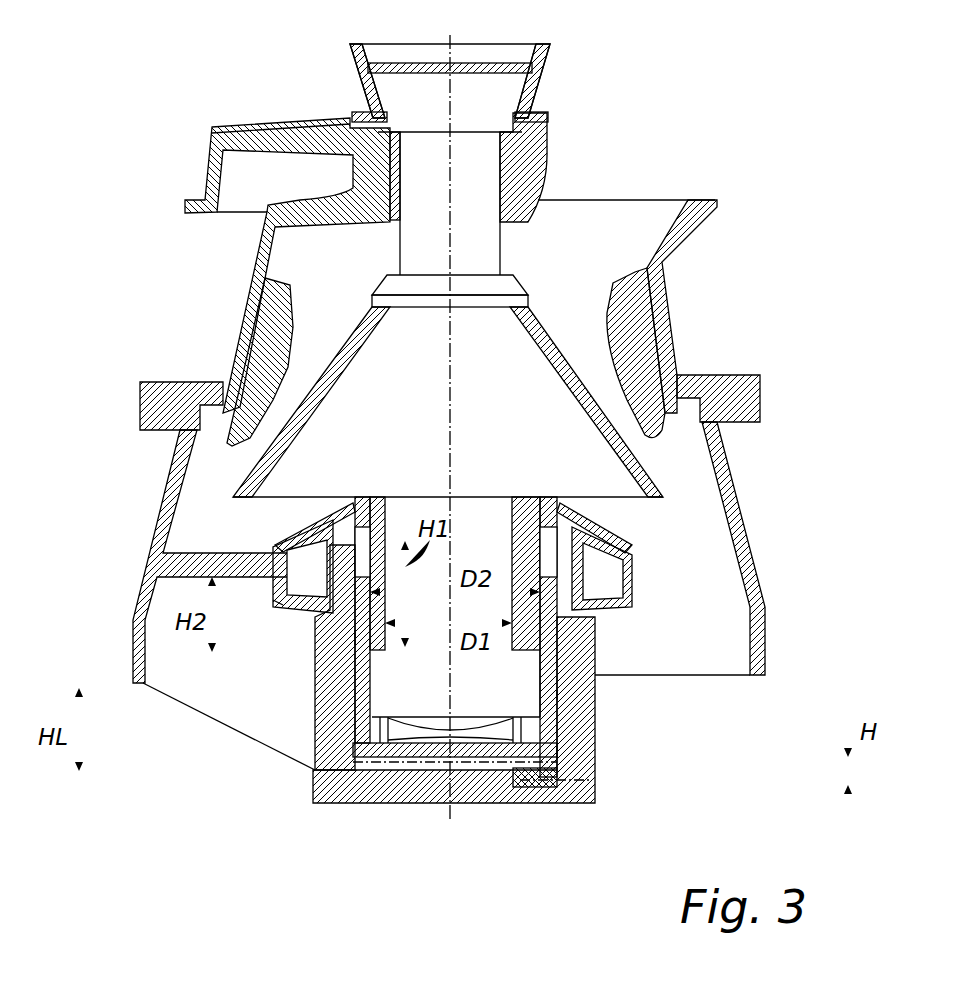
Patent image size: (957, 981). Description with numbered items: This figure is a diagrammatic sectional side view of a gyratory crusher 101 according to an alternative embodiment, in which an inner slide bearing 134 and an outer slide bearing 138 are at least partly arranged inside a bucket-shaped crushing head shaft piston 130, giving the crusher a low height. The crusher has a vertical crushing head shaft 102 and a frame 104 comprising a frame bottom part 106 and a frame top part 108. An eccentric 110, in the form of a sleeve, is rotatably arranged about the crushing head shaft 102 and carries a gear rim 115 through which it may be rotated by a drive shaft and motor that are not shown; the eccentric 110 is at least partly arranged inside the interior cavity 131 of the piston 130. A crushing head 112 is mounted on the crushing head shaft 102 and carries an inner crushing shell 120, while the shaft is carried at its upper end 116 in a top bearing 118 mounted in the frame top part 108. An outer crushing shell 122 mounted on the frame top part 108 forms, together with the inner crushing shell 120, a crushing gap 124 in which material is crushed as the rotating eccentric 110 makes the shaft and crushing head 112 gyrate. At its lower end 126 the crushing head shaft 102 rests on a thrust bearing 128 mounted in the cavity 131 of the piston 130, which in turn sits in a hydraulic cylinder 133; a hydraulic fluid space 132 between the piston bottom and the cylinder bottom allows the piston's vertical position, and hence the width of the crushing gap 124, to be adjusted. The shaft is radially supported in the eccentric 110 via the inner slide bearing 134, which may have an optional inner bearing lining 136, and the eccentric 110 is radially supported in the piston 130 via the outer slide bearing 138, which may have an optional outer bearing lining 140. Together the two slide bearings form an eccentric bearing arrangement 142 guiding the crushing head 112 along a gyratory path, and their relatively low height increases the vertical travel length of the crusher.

The gyratory crusher 101 is at (178, 110).
The crushing head shaft 102 is at (477, 542).
The frame 104 is at (765, 625).
The frame bottom part 106 is at (740, 515).
The frame top part 108 is at (660, 300).
The eccentric 110 is at (592, 613).
The crushing head 112 is at (337, 403).
The gear rim 115 is at (277, 593).
The upper end 116 is at (473, 197).
The top bearing 118 is at (517, 170).
The inner crushing shell 120 is at (580, 363).
The outer crushing shell 122 is at (663, 370).
The crushing gap 124 is at (240, 455).
The lower end 126 is at (347, 807).
The thrust bearing 128 is at (470, 733).
The crushing head shaft piston 130 is at (547, 715).
The interior cavity 131 is at (547, 688).
The hydraulic fluid space 132 is at (580, 792).
The hydraulic cylinder 133 is at (360, 637).
The inner slide bearing 134 is at (527, 685).
The inner bearing lining 136 is at (277, 542).
The outer slide bearing 138 is at (330, 737).
The outer bearing lining 140 is at (540, 603).
The eccentric bearing arrangement 142 is at (360, 603).